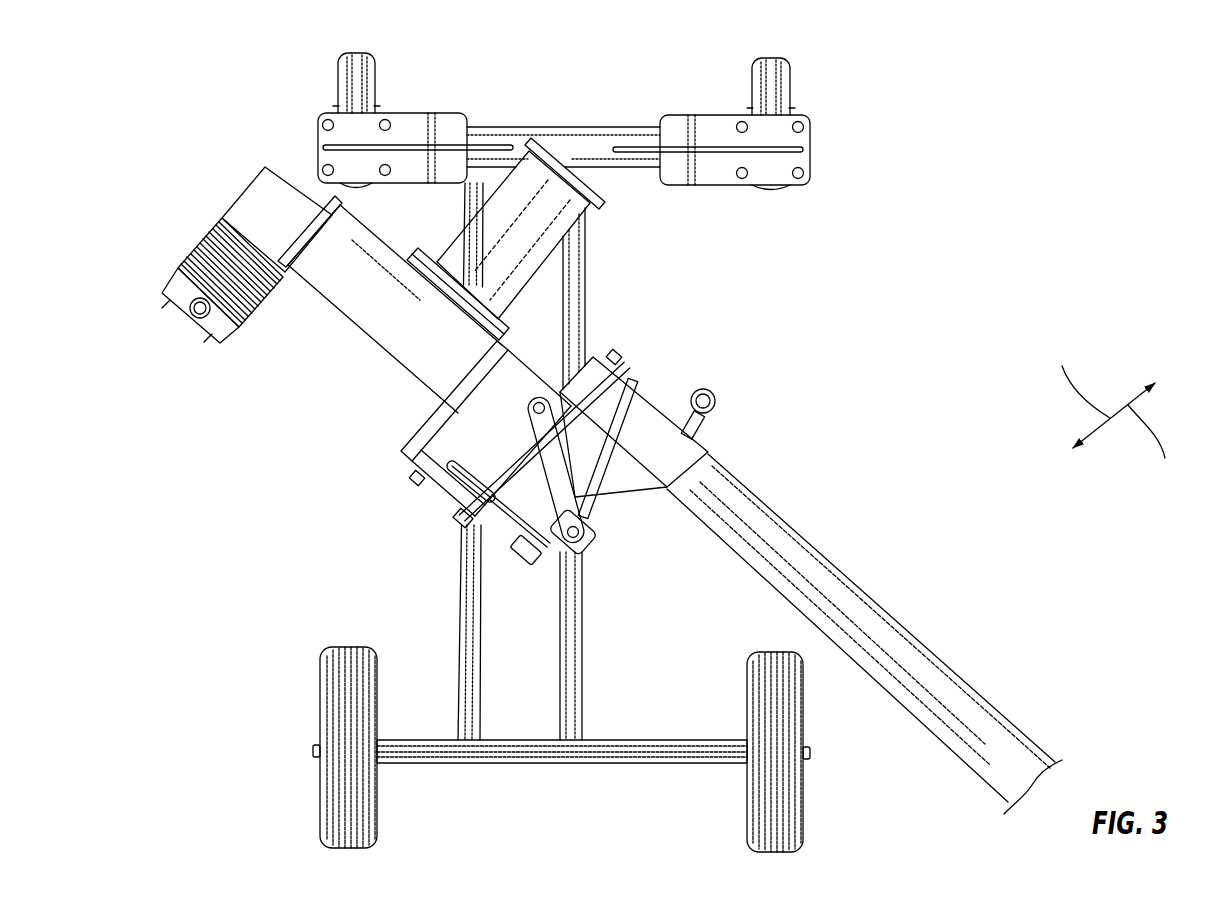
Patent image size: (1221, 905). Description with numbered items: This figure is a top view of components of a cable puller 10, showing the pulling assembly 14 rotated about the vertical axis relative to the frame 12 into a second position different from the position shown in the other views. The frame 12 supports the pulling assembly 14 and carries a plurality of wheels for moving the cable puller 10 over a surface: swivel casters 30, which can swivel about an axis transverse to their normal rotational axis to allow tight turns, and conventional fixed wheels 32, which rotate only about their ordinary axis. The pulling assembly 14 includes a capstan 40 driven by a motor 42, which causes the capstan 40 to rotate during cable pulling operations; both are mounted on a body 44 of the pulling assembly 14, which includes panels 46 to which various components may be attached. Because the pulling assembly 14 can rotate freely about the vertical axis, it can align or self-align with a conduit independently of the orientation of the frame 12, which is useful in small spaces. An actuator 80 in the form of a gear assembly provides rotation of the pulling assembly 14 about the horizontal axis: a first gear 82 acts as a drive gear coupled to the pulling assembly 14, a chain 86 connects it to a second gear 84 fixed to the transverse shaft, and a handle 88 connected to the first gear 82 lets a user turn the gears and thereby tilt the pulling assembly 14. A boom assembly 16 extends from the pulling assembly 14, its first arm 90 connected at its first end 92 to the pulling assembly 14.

The cable puller 10 is at (950, 356).
The frame 12 is at (602, 278).
The pulling assembly 14 is at (388, 402).
The boom assembly 16 is at (811, 581).
The swivel casters 30 is at (810, 84).
The wheels 32 is at (806, 808).
The capstan 40 is at (495, 238).
The motor 42 is at (247, 212).
The body 44 is at (395, 462).
The panels 46 is at (463, 532).
The actuator 80 is at (502, 507).
The first gear 82 is at (532, 560).
The second gear 84 is at (437, 488).
The chain 86 is at (490, 505).
The handle 88 is at (583, 532).
The first arm 90 is at (906, 630).
The first end 92 is at (720, 460).